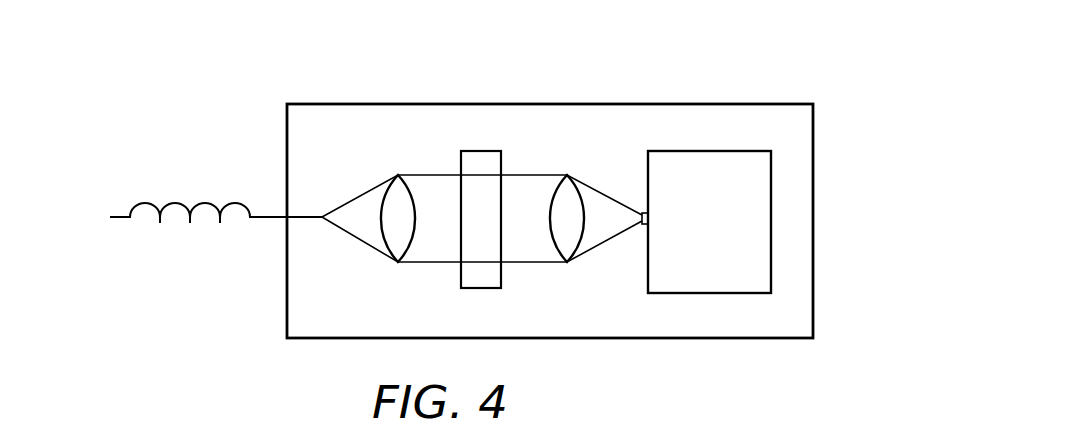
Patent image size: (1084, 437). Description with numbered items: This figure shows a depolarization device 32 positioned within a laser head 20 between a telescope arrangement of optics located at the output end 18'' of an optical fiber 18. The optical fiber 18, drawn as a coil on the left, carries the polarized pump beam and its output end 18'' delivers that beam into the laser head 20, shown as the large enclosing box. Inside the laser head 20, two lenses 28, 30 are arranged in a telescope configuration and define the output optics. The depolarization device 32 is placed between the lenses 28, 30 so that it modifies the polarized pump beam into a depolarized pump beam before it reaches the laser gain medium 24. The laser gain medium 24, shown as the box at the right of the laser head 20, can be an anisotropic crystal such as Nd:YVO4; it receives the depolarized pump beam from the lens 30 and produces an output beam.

The optical fiber 18 is at (196, 179).
The output end 18'' is at (482, 159).
The laser head 20 is at (813, 277).
The laser gain medium 24 is at (715, 160).
The lens 28 is at (395, 240).
The lens 30 is at (570, 240).
The depolarization device 32 is at (476, 282).